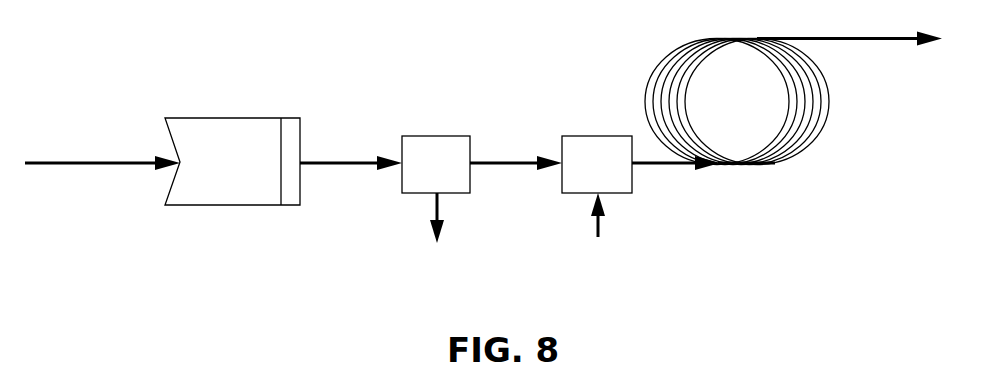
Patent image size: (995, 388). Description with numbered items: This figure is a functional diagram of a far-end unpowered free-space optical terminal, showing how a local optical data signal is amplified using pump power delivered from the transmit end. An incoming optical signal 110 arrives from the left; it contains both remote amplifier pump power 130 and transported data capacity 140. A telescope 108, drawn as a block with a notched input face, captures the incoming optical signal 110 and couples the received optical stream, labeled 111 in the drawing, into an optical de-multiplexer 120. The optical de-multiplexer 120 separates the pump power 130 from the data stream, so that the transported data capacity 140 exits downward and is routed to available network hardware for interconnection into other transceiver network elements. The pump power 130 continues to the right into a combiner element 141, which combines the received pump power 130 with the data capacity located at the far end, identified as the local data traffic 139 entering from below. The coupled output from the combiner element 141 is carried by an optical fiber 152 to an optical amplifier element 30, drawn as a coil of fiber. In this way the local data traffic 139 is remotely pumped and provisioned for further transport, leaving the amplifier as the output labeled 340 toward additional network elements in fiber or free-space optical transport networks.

The incoming optical signal 110 is at (102, 162).
The telescope 108 is at (250, 118).
The amplified optical signal 111 is at (371, 162).
The optical de-multiplexer 120 is at (450, 136).
The remote amplifier pump power 130 is at (520, 162).
The combiner element 141 is at (610, 136).
The transported data capacity 140 is at (437, 205).
The far-end data capacity 139 is at (648, 236).
The optical fiber 152 is at (663, 164).
The optical amplifier element 30 is at (814, 136).
The output optical signal 340 is at (897, 39).